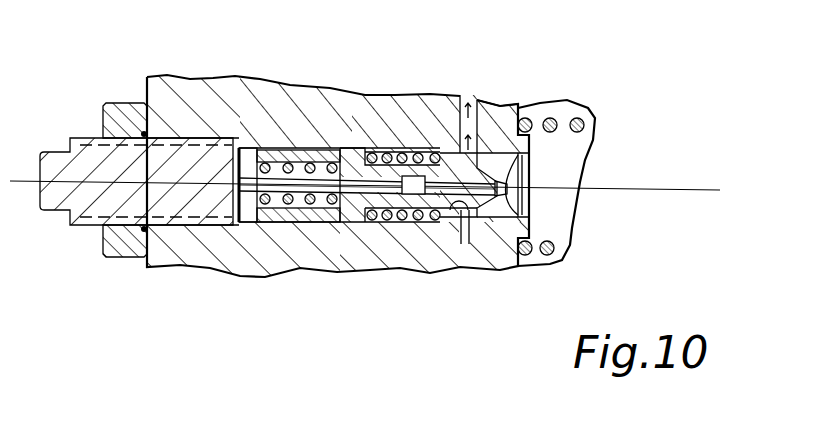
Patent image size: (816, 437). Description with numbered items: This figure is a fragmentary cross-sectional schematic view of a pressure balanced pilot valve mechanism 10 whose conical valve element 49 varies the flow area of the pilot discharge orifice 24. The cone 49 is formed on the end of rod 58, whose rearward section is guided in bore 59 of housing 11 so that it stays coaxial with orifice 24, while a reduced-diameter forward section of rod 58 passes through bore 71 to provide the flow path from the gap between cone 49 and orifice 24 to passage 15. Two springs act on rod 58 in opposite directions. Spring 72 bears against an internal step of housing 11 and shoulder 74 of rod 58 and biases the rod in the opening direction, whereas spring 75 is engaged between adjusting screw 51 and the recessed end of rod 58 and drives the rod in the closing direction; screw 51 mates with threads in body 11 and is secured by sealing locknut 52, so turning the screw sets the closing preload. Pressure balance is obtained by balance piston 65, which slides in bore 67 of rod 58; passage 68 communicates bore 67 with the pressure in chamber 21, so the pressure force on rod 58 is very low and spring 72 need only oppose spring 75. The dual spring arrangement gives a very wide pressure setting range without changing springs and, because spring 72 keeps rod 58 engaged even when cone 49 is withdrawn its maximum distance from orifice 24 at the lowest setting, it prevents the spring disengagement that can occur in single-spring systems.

The housing 10 is at (490, 268).
The housing 11 is at (498, 102).
The passage 15 is at (473, 130).
The chamber 21 is at (568, 181).
The orifice 24 is at (529, 223).
The conical valve element 49 is at (530, 148).
The adjusting screw 51 is at (188, 208).
The sealing locknut 52 is at (115, 257).
The rod 58 is at (364, 150).
The bore 59 is at (382, 220).
The balance piston 65 is at (414, 153).
The bore 67 is at (461, 95).
The passage 68 is at (470, 244).
The bore 71 is at (460, 244).
The spring 72 is at (368, 222).
The shoulder 74 is at (330, 210).
The spring 75 is at (302, 204).